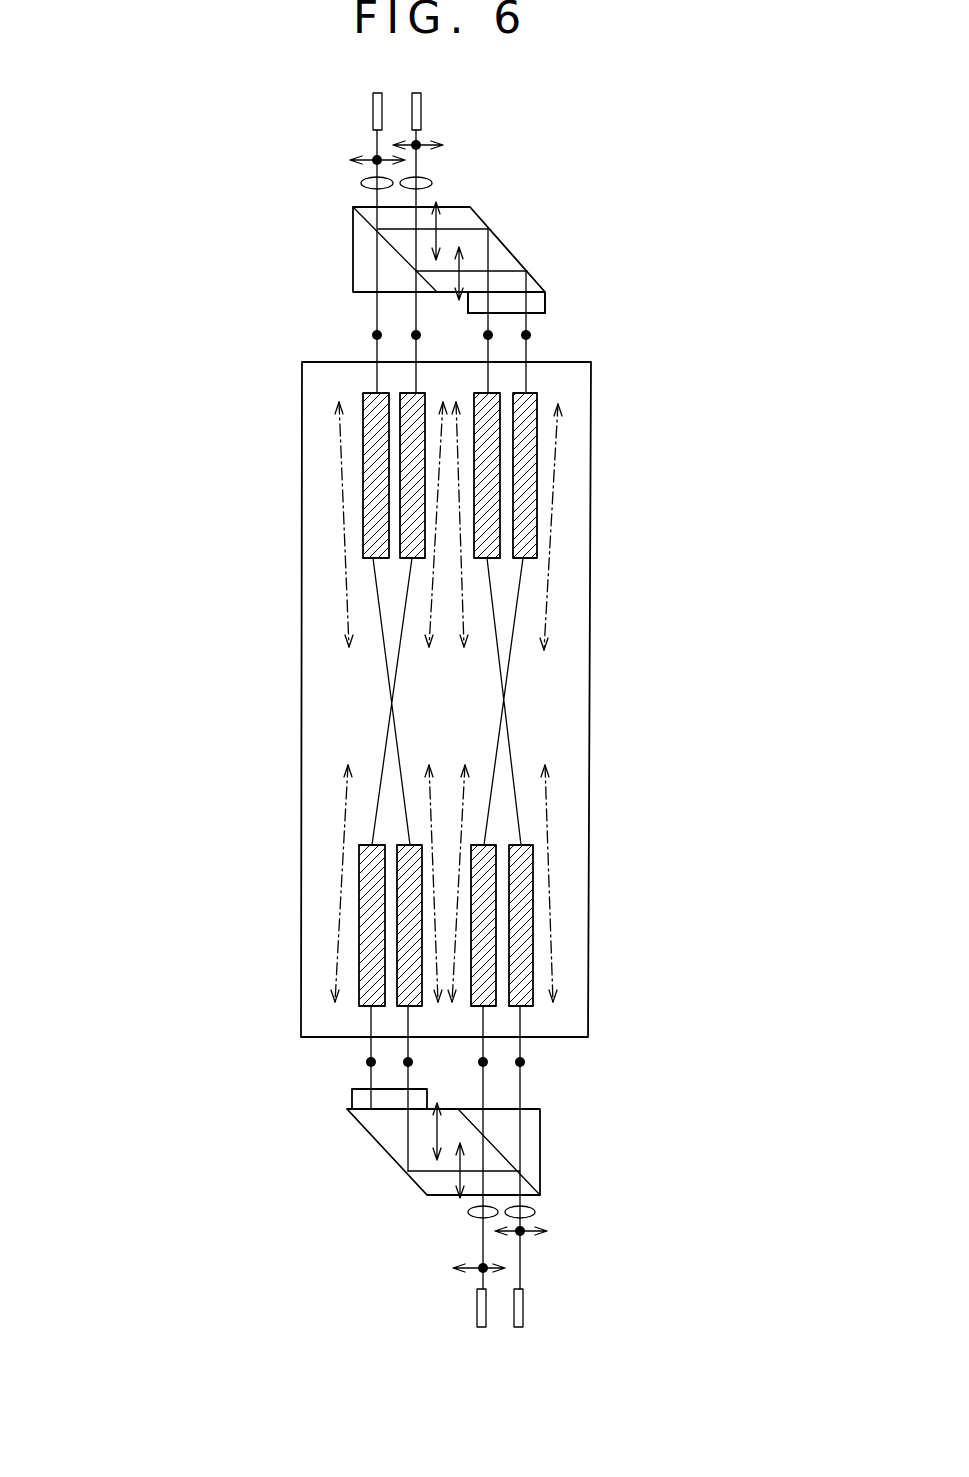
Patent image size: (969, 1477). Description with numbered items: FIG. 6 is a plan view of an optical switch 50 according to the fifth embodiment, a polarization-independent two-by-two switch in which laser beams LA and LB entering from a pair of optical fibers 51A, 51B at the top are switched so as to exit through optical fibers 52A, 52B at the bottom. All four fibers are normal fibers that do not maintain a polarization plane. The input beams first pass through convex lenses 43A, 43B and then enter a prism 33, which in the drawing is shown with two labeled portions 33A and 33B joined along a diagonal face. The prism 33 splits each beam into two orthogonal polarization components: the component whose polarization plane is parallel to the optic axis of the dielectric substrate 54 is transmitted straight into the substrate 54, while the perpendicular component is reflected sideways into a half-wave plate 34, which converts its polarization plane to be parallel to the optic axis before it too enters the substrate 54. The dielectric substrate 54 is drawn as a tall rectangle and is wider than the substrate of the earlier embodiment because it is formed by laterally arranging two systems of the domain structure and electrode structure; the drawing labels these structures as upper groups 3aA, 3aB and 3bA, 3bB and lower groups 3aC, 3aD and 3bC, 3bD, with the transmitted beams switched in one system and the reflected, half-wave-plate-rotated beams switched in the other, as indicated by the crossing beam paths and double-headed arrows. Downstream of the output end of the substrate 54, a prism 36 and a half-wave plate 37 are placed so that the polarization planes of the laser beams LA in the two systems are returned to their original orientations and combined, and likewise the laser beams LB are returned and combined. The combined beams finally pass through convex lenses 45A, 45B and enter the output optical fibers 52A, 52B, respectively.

The optical switch 50 is at (157, 1187).
The optical fiber 51A is at (373, 111).
The optical fiber 51B is at (421, 110).
The convex lens 43A is at (362, 183).
The convex lens 43B is at (432, 181).
The prism 33 is at (433, 254).
The prism portion 33A is at (500, 256).
The prism portion 33B is at (360, 257).
The half-wave plate 34 is at (545, 302).
The dielectric substrate 54 is at (522, 712).
The optical element 3aA is at (413, 422).
The optical element 3aB is at (373, 513).
The optical element 3bA is at (493, 418).
The optical element 3bB is at (528, 503).
The optical element 3aC is at (407, 872).
The optical element 3aD is at (365, 953).
The optical element 3bC is at (488, 875).
The optical element 3bD is at (530, 948).
The prism 36 is at (427, 1182).
The half-wave plate 37 is at (355, 1100).
The convex lens 45A is at (470, 1215).
The convex lens 45B is at (532, 1212).
The optical fiber 52A is at (477, 1295).
The optical fiber 52B is at (523, 1303).